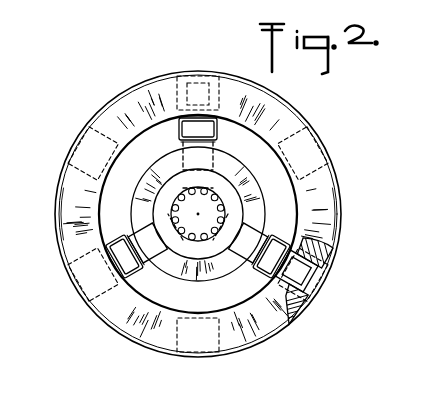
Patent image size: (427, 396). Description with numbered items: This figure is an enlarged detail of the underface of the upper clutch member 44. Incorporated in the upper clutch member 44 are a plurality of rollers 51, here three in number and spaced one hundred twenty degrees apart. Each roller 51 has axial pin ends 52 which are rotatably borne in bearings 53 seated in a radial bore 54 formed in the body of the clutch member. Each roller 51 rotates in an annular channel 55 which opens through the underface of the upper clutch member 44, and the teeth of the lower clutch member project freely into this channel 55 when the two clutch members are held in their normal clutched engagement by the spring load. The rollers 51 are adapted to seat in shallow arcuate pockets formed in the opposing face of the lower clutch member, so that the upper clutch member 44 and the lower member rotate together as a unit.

The upper clutch member 44 is at (322, 139).
The rollers 51 is at (217, 125).
The axial pin ends 52 is at (316, 269).
The bearings 53 is at (320, 268).
The radial bore 54 is at (321, 282).
The annular channel 55 is at (101, 213).